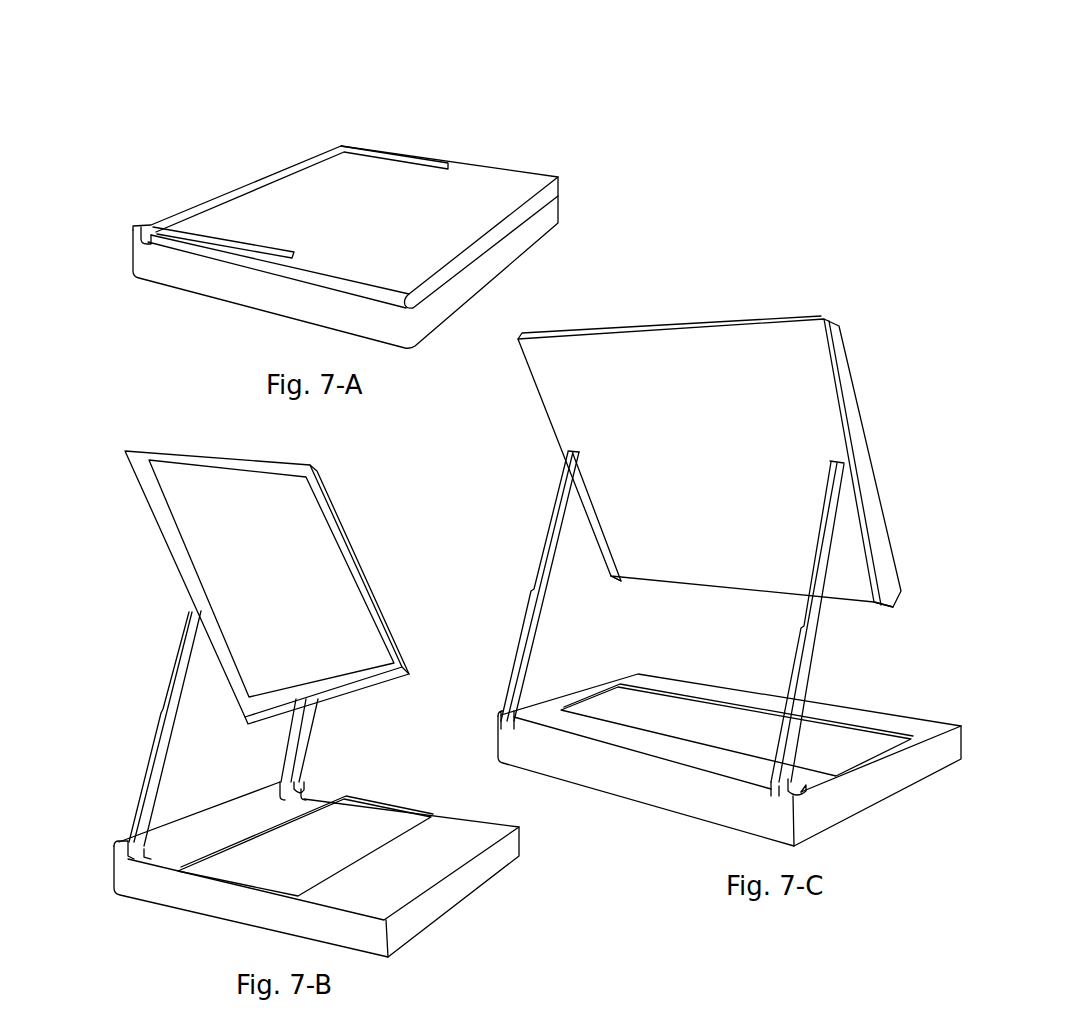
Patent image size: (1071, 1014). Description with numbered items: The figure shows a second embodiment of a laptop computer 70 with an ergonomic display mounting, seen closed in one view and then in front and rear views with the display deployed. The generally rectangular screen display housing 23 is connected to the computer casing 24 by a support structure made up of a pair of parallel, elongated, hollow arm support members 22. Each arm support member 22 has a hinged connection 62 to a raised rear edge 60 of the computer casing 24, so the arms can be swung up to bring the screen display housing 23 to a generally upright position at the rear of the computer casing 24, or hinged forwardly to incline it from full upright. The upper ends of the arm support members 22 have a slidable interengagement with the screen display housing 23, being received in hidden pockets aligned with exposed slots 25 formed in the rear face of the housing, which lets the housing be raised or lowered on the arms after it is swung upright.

In FIG. 7A, the arm support members 22 is at (345, 150).
In FIG. 7B, the arm support members 22 is at (155, 727).
In FIG. 7C, the arm support members 22 is at (548, 552).
In FIG. 7A, the screen display housing 23 is at (548, 195).
In FIG. 7B, the screen display housing 23 is at (352, 552).
In FIG. 7C, the screen display housing 23 is at (665, 322).
In FIG. 7A, the computer casing 24 is at (232, 306).
In FIG. 7B, the computer casing 24 is at (455, 898).
In FIG. 7C, the computer casing 24 is at (893, 787).
In FIG. 7C, the slots 25 is at (615, 579).
In FIG. 7A, the raised rear edge 60 is at (142, 236).
In FIG. 7B, the raised rear edge 60 is at (305, 846).
In FIG. 7C, the raised rear edge 60 is at (641, 750).
In FIG. 7B, the hinged connection 62 is at (124, 833).
In FIG. 7C, the hinged connection 62 is at (494, 735).
In FIG. 7A, the laptop computer 70 is at (446, 146).
In FIG. 7B, the laptop computer 70 is at (420, 660).
In FIG. 7C, the laptop computer 70 is at (514, 431).